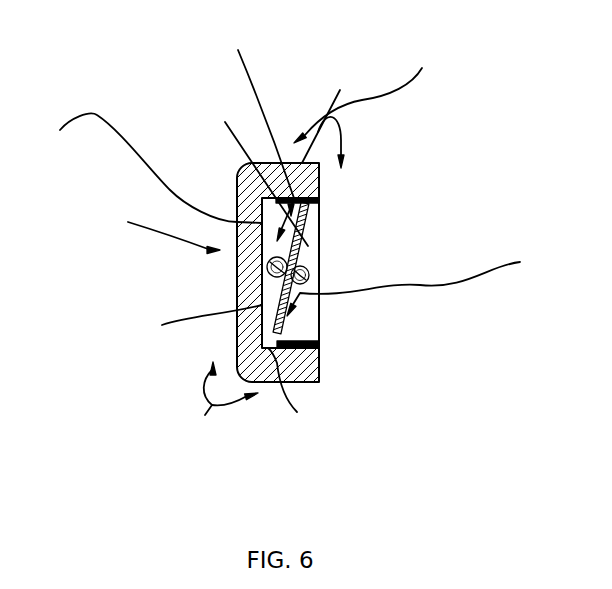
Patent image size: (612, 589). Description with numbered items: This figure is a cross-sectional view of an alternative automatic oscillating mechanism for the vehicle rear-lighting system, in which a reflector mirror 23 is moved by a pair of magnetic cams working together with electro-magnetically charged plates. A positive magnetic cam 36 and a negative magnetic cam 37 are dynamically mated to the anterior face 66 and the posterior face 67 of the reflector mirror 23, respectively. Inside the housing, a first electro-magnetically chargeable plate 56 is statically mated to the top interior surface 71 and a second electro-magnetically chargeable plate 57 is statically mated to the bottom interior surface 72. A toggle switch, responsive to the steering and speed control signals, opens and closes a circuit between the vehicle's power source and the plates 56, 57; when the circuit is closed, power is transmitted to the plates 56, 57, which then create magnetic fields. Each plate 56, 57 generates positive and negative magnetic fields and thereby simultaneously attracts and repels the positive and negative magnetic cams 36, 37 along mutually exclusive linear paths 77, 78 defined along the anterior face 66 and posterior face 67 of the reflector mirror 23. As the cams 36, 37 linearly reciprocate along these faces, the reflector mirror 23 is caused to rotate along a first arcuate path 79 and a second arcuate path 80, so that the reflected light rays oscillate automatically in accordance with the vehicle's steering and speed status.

The reflector mirror 23 is at (193, 322).
The positive magnetic cam 36 is at (267, 266).
The negative magnetic cam 37 is at (309, 272).
The electro-magnetically chargeable plate 56 is at (320, 198).
The electro-magnetically chargeable plate 57 is at (319, 341).
The anterior face 66 is at (306, 228).
The posterior face 67 is at (257, 170).
The top interior surface 71 is at (256, 131).
The bottom interior surface 72 is at (302, 390).
The linear path 77 is at (419, 282).
The linear path 78 is at (143, 168).
The first arcuate path 79 is at (220, 404).
The second arcuate path 80 is at (368, 88).